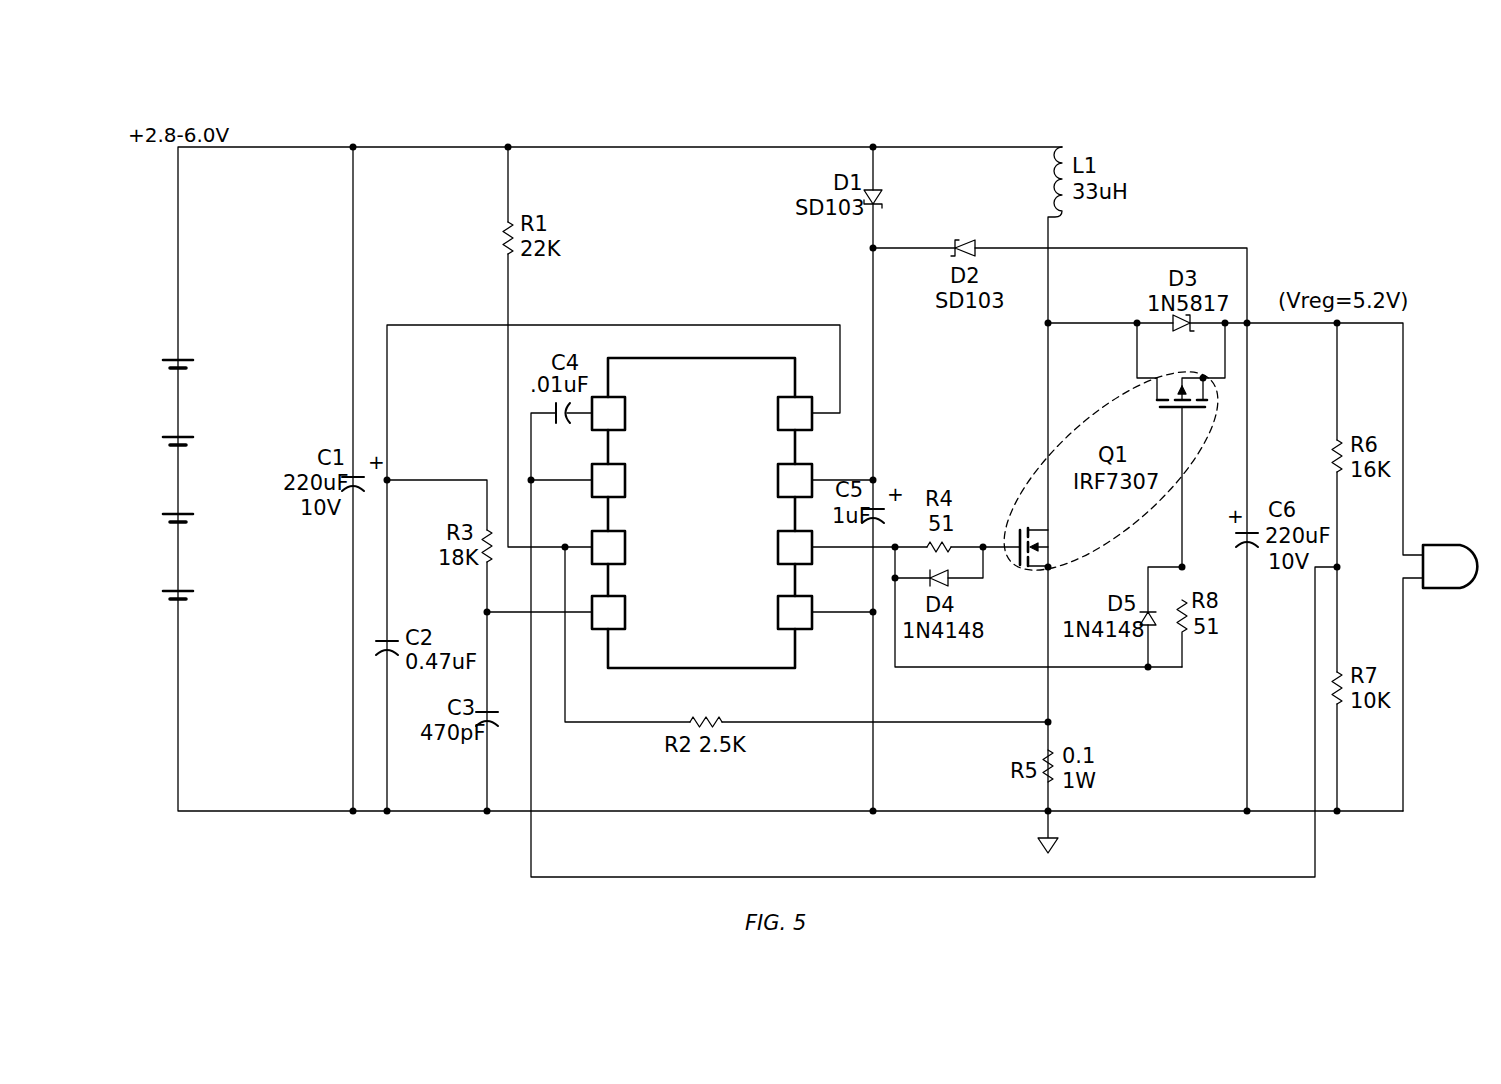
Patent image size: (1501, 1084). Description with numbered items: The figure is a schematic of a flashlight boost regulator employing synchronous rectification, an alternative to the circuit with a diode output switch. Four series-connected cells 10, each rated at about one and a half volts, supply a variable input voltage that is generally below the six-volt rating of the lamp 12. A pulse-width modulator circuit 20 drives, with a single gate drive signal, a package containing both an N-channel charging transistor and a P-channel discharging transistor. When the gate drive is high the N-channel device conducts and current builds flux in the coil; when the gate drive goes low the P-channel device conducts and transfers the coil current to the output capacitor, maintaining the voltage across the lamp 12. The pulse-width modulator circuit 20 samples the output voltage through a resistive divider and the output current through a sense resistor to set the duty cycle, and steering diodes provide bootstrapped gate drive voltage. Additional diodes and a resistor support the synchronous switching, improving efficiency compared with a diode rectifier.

The cells 10 is at (163, 366).
The lamp 12 is at (1448, 545).
The pulse-width modulator circuit 20 is at (797, 668).